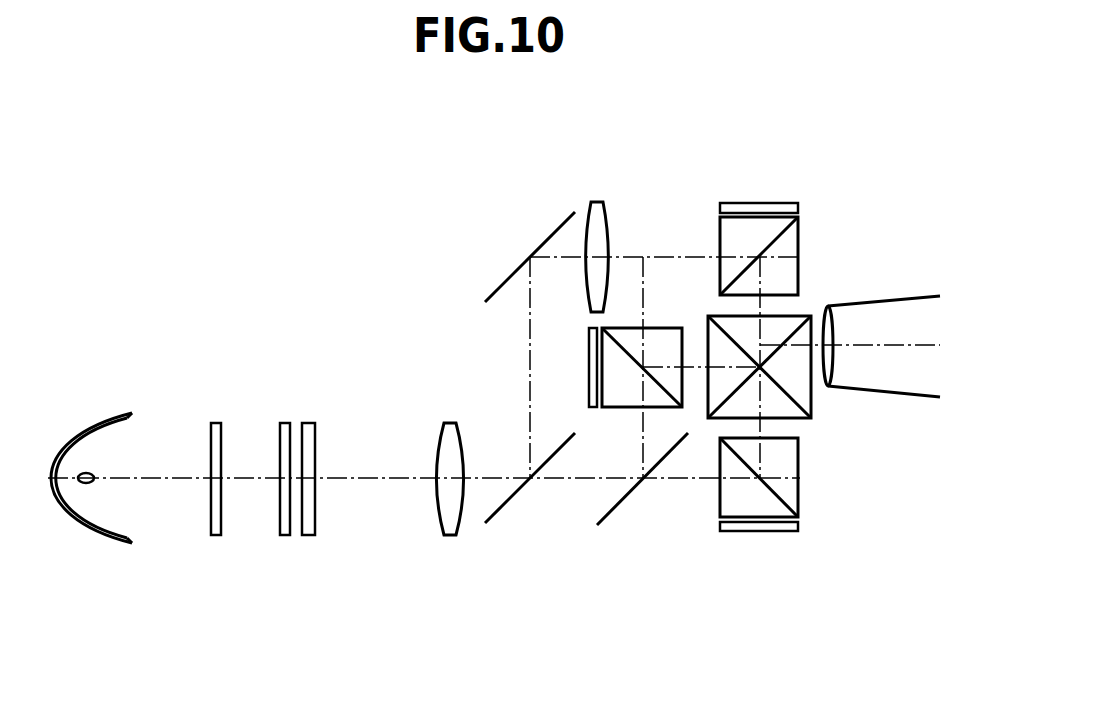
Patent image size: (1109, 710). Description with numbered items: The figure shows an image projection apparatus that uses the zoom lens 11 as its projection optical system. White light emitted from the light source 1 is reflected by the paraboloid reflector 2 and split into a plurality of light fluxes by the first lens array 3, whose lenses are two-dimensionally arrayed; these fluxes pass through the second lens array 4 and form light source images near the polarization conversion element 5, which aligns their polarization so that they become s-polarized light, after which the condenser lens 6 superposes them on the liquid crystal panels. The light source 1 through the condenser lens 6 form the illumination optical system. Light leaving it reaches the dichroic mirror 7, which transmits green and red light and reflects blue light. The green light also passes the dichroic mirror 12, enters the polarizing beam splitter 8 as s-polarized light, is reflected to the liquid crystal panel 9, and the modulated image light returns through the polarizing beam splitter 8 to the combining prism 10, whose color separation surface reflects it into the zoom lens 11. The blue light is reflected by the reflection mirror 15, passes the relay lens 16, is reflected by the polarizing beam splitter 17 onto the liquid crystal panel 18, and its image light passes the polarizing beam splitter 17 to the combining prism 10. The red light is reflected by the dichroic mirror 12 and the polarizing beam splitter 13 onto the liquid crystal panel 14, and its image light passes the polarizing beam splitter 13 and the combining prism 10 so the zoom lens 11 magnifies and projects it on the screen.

The light source 1 is at (92, 474).
The paraboloid reflector 2 is at (112, 414).
The first lens array 3 is at (217, 423).
The second lens array 4 is at (286, 423).
The polarization conversion element 5 is at (309, 423).
The condenser lens 6 is at (450, 423).
The dichroic mirror 7 is at (510, 499).
The polarizing beam splitter 8 is at (800, 460).
The liquid crystal panel 9 is at (758, 532).
The combining prism 10 is at (812, 404).
The zoom lens 11 is at (888, 298).
The dichroic mirror 12 is at (618, 505).
The polarizing beam splitter 13 is at (661, 327).
The liquid crystal panel 14 is at (588, 367).
The reflection mirror 15 is at (557, 229).
The relay lens 16 is at (597, 202).
The polarizing beam splitter 17 is at (718, 228).
The liquid crystal panel 18 is at (760, 203).